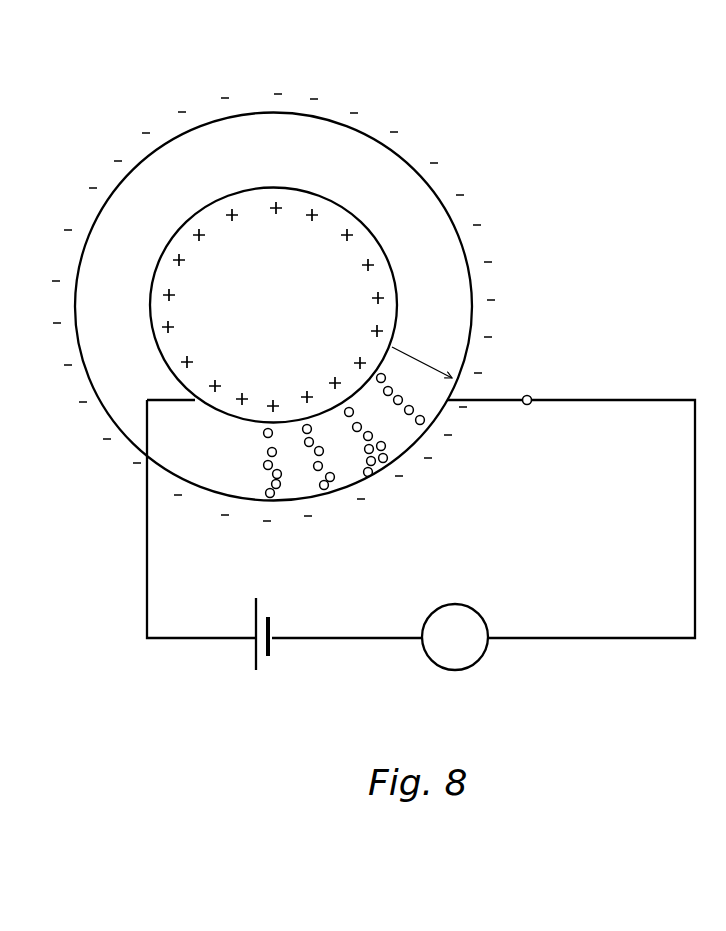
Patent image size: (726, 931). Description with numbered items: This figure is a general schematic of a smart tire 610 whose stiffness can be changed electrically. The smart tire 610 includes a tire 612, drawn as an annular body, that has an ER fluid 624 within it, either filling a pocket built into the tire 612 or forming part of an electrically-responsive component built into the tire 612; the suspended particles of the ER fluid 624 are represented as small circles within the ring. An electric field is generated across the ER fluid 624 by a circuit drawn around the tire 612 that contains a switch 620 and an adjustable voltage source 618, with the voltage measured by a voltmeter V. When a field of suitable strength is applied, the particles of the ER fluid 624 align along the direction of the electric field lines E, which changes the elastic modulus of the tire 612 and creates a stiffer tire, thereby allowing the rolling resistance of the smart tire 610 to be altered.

The smart tire 610 is at (373, 388).
The tire 612 is at (455, 215).
The adjustable voltage source 618 is at (262, 673).
The switch 620 is at (548, 403).
The ER fluid 624 is at (408, 395).